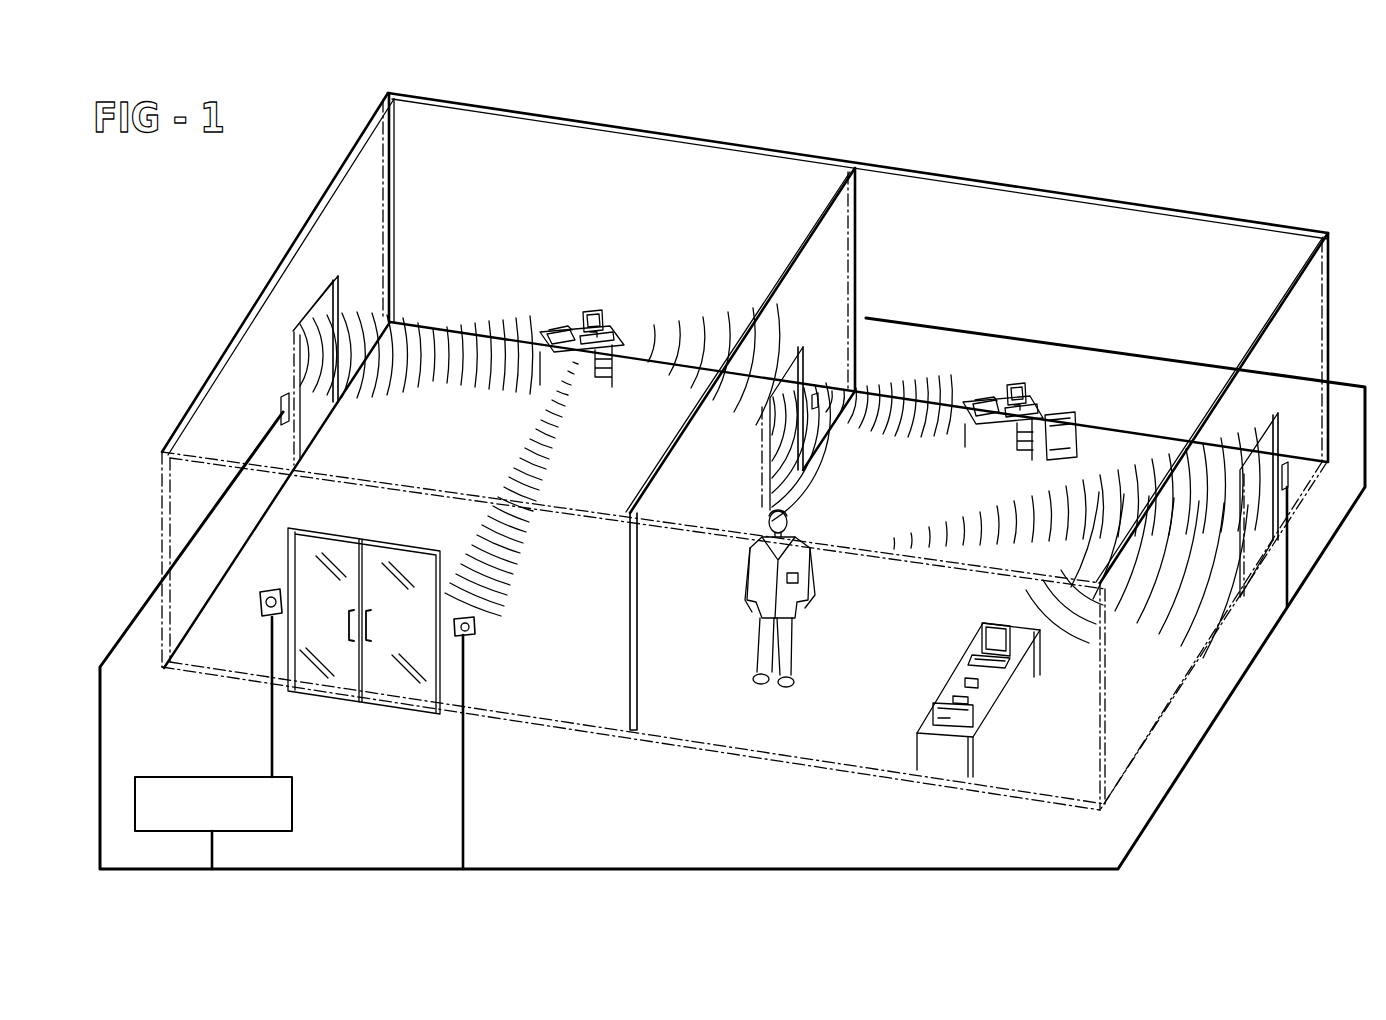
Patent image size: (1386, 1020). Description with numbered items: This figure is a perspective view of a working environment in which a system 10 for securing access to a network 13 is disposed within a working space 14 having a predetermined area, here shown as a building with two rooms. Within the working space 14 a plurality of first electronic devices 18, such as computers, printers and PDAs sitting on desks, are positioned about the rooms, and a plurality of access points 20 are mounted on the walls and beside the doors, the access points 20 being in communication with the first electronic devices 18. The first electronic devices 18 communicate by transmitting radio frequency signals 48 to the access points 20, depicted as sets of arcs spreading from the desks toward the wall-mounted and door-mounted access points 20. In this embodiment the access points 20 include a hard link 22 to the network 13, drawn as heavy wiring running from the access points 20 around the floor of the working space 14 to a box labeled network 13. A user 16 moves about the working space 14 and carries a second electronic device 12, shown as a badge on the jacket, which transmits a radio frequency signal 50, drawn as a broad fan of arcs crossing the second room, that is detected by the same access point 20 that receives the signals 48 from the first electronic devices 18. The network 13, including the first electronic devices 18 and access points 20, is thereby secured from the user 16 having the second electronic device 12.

The system 10 is at (1298, 824).
The second electronic device 12 is at (798, 585).
The network 13 is at (292, 790).
The working space 14 is at (1112, 135).
The user 16 is at (800, 535).
The first electronic device 18 is at (563, 320).
The access point 20 is at (288, 395).
The hard link 22 is at (104, 752).
The radio frequency signals 48 is at (457, 330).
The radio frequency signal 50 is at (993, 513).